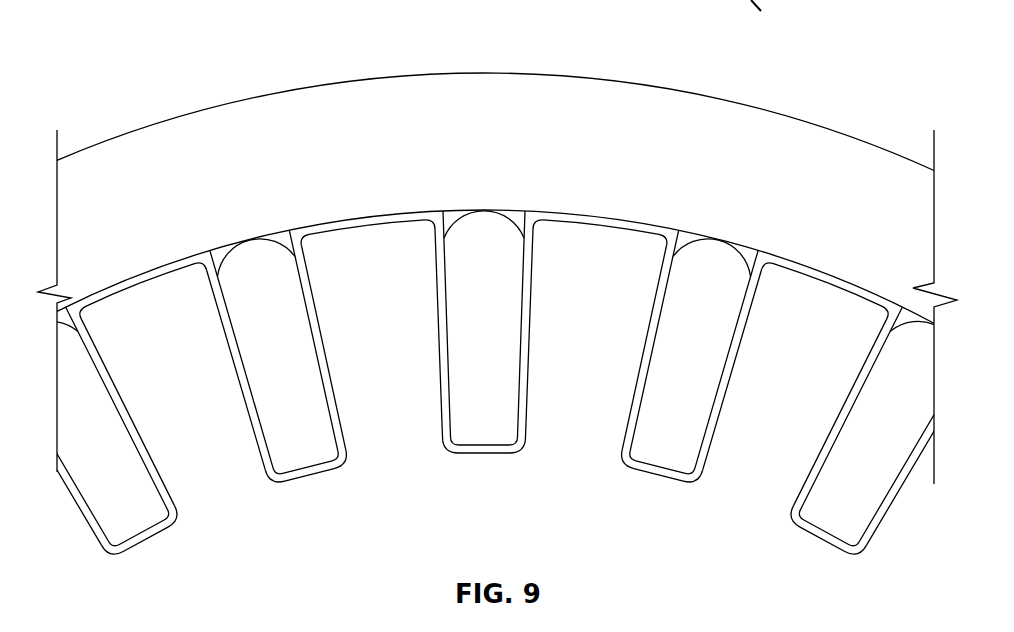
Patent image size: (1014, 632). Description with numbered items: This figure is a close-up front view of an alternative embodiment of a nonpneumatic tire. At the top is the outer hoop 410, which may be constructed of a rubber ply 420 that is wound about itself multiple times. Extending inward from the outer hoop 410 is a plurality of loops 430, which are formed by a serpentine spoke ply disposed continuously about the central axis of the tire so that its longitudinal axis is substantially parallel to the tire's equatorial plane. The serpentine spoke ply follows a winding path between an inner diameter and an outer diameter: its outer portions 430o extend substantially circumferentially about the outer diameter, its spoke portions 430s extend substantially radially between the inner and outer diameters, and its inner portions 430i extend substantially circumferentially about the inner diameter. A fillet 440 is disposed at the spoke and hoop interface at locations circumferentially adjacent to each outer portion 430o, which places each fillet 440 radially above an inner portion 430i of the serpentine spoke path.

The outer hoop 410 is at (753, 88).
The rubber ply 420 is at (865, 154).
The loops 430 is at (507, 385).
The outer portions 430o is at (608, 223).
The spoke portions 430s is at (641, 350).
The inner portions 430i is at (827, 438).
The fillet 440 is at (290, 240).